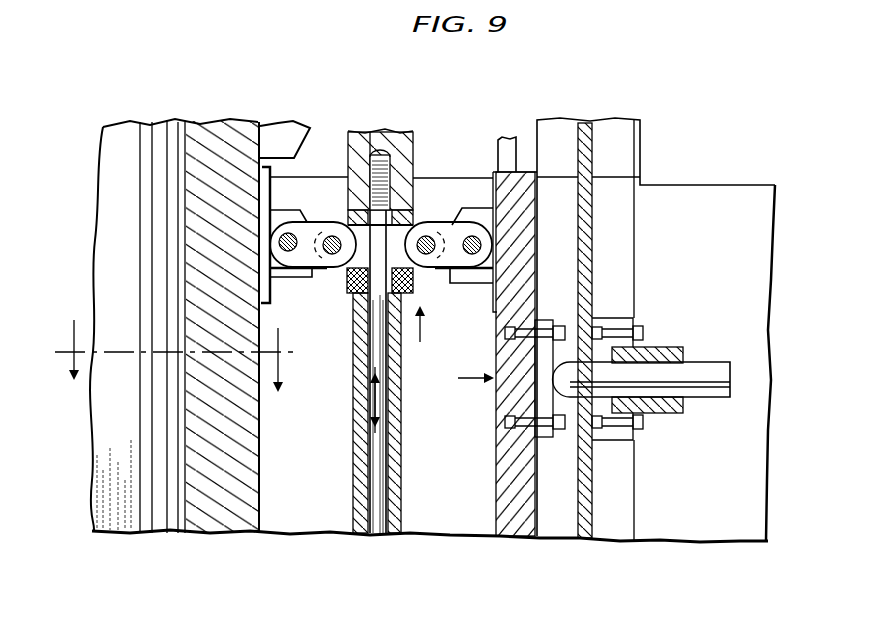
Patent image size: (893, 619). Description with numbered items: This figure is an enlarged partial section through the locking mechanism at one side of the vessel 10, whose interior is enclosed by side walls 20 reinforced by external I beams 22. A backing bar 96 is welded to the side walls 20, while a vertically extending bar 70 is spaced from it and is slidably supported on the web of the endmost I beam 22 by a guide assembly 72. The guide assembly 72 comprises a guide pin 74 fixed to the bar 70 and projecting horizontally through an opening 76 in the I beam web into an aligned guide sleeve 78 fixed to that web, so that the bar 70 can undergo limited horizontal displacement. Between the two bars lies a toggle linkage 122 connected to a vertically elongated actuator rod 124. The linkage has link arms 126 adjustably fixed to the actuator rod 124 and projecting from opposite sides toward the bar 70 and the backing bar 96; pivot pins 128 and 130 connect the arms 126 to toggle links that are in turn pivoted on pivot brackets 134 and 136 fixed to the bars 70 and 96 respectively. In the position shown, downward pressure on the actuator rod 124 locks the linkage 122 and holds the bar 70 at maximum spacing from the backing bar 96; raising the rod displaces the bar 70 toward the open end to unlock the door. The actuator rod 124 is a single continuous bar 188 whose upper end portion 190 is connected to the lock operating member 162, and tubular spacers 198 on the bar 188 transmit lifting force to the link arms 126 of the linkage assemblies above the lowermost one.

The vessel 10 is at (174, 358).
The side wall 20 is at (727, 198).
The I beam 22 is at (598, 163).
The bar 70 is at (515, 195).
The guide assembly 72 is at (670, 332).
The guide pin 74 is at (708, 377).
The opening 76 is at (568, 430).
The guide sleeve 78 is at (665, 405).
The backing bar 96 is at (215, 500).
The toggle linkage 122 is at (431, 338).
The actuator rod 124 is at (348, 496).
The link arm 126 is at (410, 203).
The pivot pin 128 is at (428, 236).
The pivot pin 130 is at (330, 234).
The pivot bracket 134 is at (468, 277).
The pivot bracket 136 is at (290, 272).
The lock operating member 162 is at (397, 150).
The bar 188 is at (373, 520).
The upper end portion 190 is at (358, 170).
The tubular spacer 198 is at (400, 466).